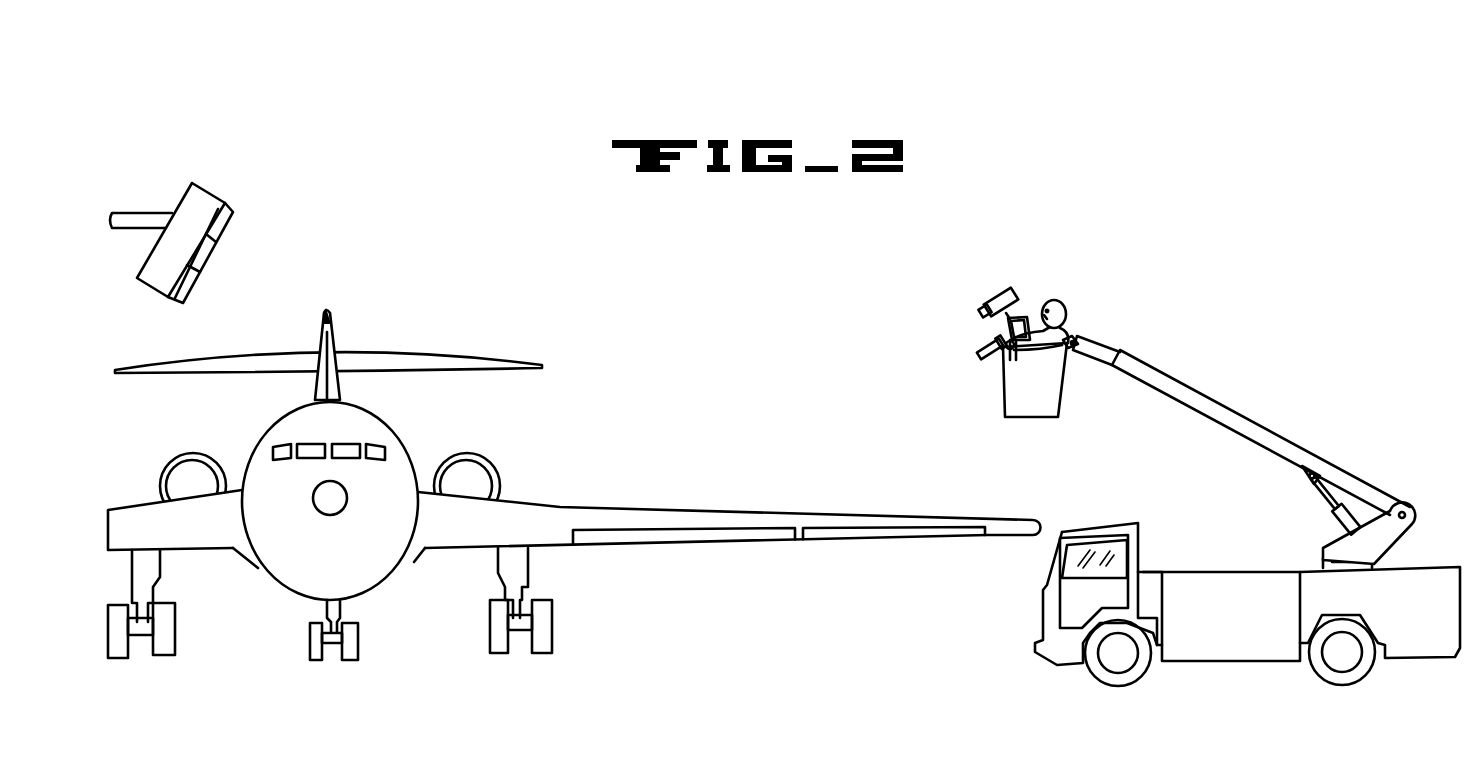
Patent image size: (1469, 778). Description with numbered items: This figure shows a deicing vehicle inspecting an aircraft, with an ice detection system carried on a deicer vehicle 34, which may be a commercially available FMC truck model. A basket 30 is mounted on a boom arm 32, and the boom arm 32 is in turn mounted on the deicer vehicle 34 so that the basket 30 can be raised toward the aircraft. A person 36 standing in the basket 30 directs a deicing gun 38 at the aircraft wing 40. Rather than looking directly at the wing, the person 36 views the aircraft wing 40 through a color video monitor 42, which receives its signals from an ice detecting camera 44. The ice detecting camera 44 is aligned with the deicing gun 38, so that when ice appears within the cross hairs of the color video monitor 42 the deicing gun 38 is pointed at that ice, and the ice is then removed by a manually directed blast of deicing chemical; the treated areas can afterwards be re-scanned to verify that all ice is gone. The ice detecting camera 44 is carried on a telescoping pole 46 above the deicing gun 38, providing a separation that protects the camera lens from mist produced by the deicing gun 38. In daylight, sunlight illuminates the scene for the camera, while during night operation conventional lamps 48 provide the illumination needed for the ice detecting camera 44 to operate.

The basket 30 is at (1013, 405).
The boom arm 32 is at (1203, 393).
The deicer vehicle 34 is at (1200, 570).
The person 36 is at (1067, 337).
The deicing gun 38 is at (993, 365).
The aircraft wing 40 is at (662, 508).
The color video monitor 42 is at (1022, 319).
The ice detecting camera 44 is at (998, 298).
The telescoping pole 46 is at (1000, 331).
The conventional lamps 48 is at (210, 195).